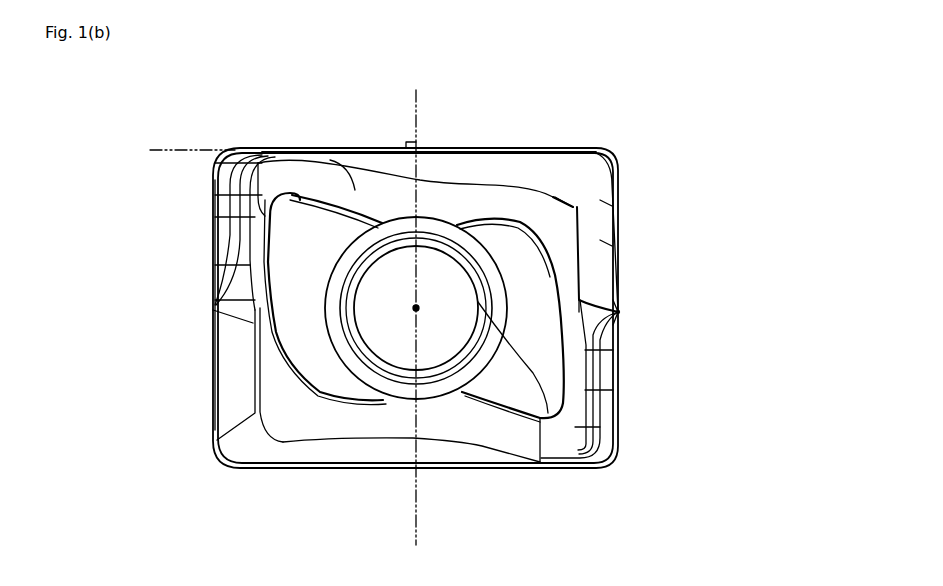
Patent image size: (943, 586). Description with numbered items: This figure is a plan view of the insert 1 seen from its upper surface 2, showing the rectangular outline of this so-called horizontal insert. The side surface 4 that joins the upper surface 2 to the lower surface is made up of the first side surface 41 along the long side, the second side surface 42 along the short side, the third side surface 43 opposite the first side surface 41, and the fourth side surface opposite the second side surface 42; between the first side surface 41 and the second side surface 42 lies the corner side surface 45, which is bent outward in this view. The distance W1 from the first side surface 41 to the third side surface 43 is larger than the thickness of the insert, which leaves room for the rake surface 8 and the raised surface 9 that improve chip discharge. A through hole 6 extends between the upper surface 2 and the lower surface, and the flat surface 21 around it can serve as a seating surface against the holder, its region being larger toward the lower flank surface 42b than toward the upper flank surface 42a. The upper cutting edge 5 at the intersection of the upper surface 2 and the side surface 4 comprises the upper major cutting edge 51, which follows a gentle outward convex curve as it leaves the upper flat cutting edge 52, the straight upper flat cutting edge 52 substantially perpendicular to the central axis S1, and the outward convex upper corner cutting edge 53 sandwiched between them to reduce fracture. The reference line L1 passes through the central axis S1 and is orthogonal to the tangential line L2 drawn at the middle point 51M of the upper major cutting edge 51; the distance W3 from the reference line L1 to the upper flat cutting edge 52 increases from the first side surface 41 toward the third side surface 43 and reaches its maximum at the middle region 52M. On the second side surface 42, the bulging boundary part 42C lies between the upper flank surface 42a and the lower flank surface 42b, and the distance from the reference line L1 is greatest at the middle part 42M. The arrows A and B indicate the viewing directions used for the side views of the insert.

The insert 1 is at (618, 468).
The upper surface 2 is at (279, 189).
The flat surface 21 is at (298, 236).
The side surface 4 is at (213, 359).
The first side surface 41 is at (492, 149).
The second side surface 42 is at (620, 262).
The upper flank surface 42a is at (619, 233).
The lower flank surface 42b is at (619, 396).
The boundary part 42C is at (619, 313).
The middle part 42M is at (615, 312).
The third side surface 43 is at (483, 468).
The corner side surface 45 is at (601, 154).
The upper cutting edge 5 is at (728, 86).
The upper major cutting edge 51 is at (538, 247).
The middle point of the upper major cutting edge 51M is at (417, 147).
The upper flat cutting edge 52 is at (610, 201).
The middle region 52M is at (620, 313).
The upper corner cutting edge 53 is at (602, 155).
The through hole 6 is at (383, 340).
The rake surface 8 is at (360, 163).
The raised surface 9 is at (322, 190).
The central axis S1 is at (416, 308).
The reference line L1 is at (414, 510).
The tangential line L2 is at (187, 146).
The distance W1 is at (808, 150).
The distance W3 is at (612, 208).
The direction A is at (416, 25).
The direction B is at (728, 312).